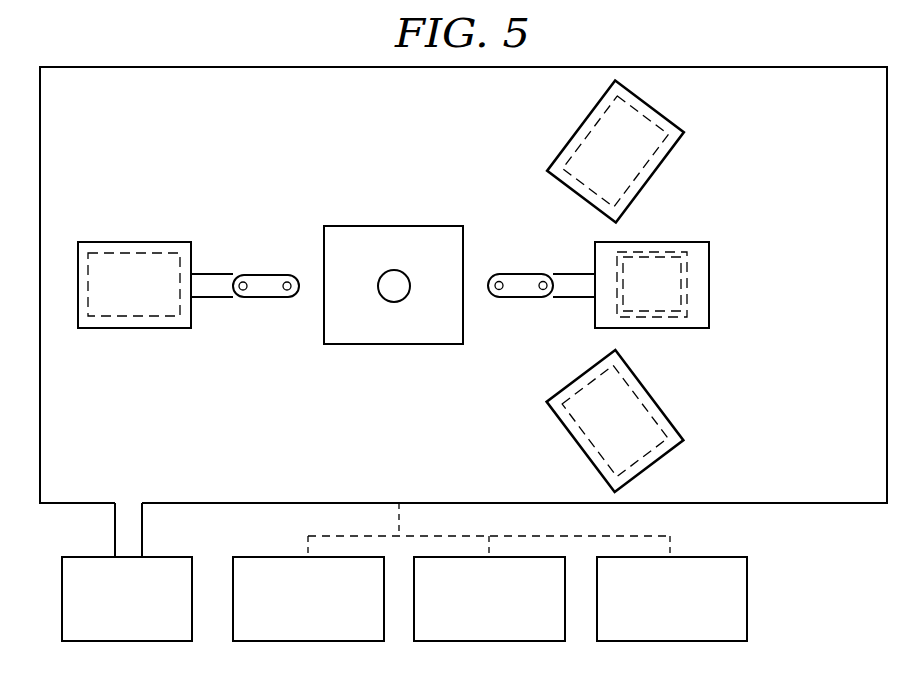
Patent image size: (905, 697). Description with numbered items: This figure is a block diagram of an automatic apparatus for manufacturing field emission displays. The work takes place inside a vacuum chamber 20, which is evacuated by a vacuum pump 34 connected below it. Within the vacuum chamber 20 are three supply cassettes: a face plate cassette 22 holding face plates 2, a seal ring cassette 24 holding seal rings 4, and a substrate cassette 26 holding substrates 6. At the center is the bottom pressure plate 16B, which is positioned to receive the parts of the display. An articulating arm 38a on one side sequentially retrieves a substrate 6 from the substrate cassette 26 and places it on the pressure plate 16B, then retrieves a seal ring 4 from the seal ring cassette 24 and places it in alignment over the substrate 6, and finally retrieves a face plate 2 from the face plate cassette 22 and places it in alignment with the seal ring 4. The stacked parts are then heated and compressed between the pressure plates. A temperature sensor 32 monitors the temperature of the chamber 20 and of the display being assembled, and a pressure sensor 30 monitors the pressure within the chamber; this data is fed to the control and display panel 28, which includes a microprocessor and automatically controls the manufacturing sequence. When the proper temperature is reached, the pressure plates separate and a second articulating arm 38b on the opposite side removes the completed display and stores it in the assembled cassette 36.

The vacuum chamber 20 is at (312, 75).
The face plate 2 is at (588, 128).
The face plate cassette 22 is at (662, 167).
The seal ring 4 is at (662, 252).
The seal ring cassette 24 is at (709, 290).
The substrate 6 is at (578, 440).
The substrate cassette 26 is at (662, 408).
The bottom pressure plate 16B is at (367, 345).
The assembled cassette 36 is at (122, 242).
The articulating arm 38a is at (516, 299).
The articulating arm 38b is at (224, 300).
The vacuum pump 34 is at (108, 642).
The temperature sensor 32 is at (300, 642).
The pressure sensor 30 is at (480, 642).
The control and display panel 28 is at (690, 642).